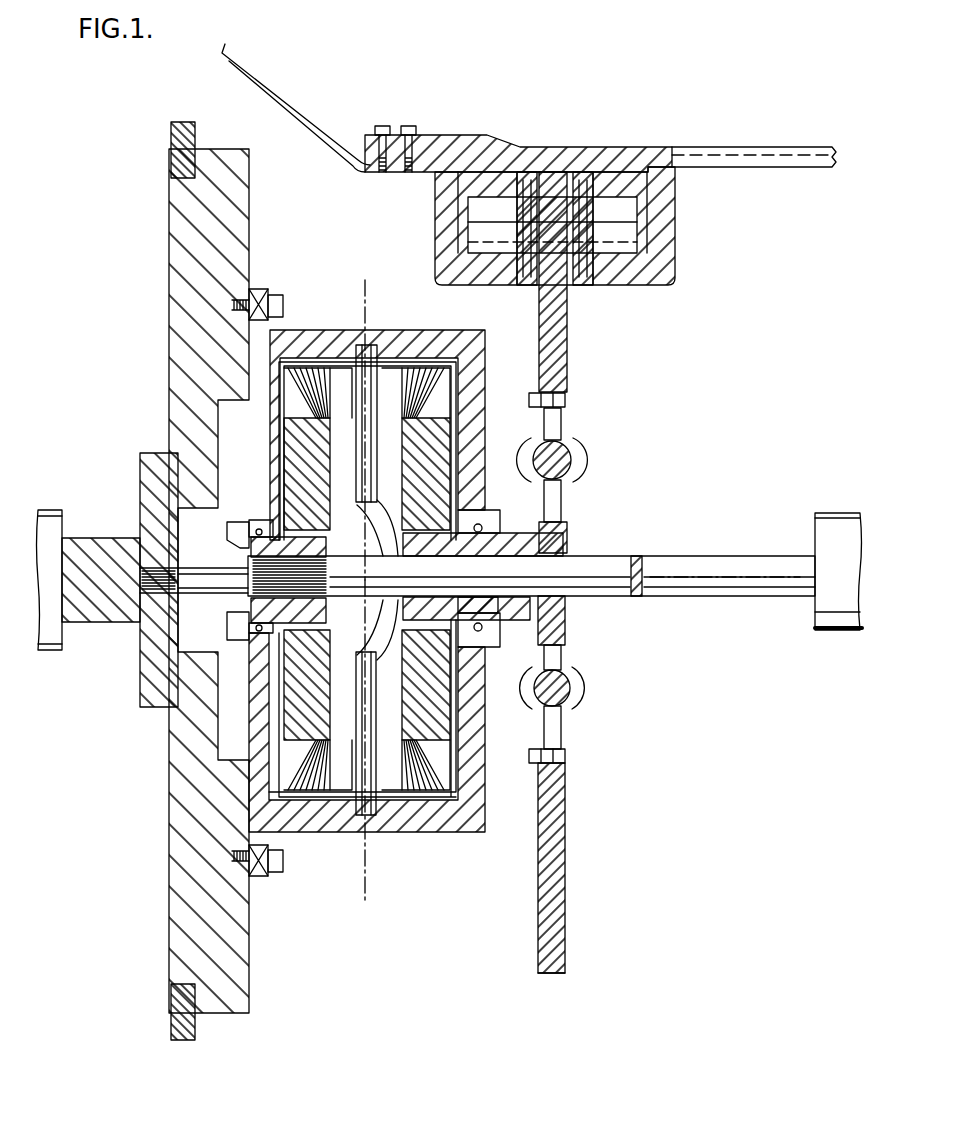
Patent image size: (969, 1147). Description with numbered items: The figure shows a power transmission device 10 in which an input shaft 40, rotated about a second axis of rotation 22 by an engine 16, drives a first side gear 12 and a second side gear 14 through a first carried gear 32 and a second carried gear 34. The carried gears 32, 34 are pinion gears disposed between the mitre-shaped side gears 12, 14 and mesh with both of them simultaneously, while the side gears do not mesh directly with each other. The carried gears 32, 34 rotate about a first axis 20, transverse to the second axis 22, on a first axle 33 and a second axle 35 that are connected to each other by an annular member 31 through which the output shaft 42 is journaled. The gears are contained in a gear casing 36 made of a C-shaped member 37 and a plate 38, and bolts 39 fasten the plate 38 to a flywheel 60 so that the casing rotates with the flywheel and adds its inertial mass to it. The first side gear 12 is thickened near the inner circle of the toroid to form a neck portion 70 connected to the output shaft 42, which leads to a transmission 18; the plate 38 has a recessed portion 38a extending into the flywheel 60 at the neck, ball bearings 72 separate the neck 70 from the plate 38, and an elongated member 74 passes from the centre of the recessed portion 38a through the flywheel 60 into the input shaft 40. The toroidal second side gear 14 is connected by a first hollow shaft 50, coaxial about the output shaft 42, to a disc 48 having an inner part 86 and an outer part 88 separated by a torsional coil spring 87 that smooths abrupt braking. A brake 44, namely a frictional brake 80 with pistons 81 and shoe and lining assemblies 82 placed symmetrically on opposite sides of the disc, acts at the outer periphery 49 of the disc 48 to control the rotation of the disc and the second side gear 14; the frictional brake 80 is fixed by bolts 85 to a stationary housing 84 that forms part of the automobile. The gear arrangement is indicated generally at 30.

The power transmission device 10 is at (688, 392).
The first side gear 12 is at (282, 748).
The second side gear 14 is at (441, 495).
The engine 16 is at (48, 508).
The transmission 18 is at (830, 512).
The first axis 20 is at (367, 885).
The second axis of rotation 22 is at (728, 547).
The clutch mechanism 30 is at (330, 288).
The annular member 31 is at (372, 506).
The first carried gear 32 is at (429, 367).
The first axle 33 is at (366, 328).
The second carried gear 34 is at (327, 802).
The second axle 35 is at (373, 818).
The gear casing 36 is at (407, 324).
The C-shaped member 37 is at (456, 843).
The plate 38 is at (258, 887).
The recessed portion 38a is at (226, 543).
The bolts 39 is at (279, 280).
The input shaft 40 is at (95, 626).
The output shaft 42 is at (730, 608).
The brake 44 is at (690, 277).
The disc 48 is at (584, 907).
The outer periphery 49 is at (571, 981).
The first hollow shaft 50 is at (522, 622).
The flywheel 60 is at (243, 1020).
The neck portion 70 is at (171, 705).
The ball bearings 72 is at (262, 530).
The elongated member 74 is at (197, 600).
The frictional brake 80 is at (645, 120).
The pistons 81 is at (626, 225).
The shoe and lining assemblies 82 is at (530, 293).
The housing 84 is at (297, 95).
The bolts 85 is at (386, 110).
The inner part 86 is at (582, 526).
The torsional coil spring 87 is at (582, 688).
The outer part 88 is at (574, 366).